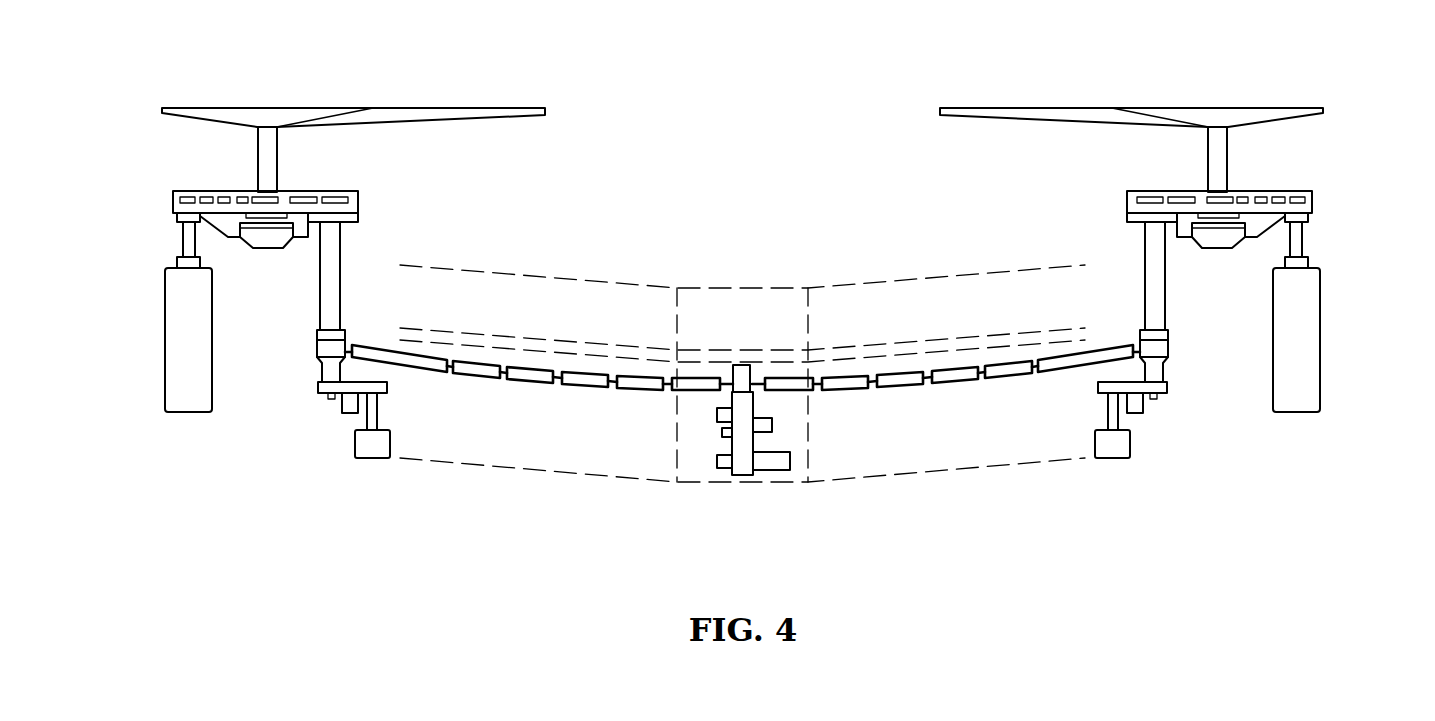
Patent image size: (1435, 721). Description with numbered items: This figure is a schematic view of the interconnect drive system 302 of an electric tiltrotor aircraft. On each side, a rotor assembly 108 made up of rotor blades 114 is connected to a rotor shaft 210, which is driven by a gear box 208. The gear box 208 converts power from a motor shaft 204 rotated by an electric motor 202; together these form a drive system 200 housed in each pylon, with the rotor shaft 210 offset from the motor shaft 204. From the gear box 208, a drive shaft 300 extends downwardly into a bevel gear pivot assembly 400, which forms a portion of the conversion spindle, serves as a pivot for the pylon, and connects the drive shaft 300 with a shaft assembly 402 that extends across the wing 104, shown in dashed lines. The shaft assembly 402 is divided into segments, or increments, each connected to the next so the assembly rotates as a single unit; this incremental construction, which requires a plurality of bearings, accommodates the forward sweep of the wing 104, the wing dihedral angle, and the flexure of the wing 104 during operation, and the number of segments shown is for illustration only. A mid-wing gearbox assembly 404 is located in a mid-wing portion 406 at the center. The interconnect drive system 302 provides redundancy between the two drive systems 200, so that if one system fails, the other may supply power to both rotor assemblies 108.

The wing 104 is at (587, 280).
The rotor assembly 108 is at (742, 132).
The rotor blades 114 is at (463, 107).
The drive system 200 is at (742, 313).
The electric motor 202 is at (162, 372).
The motor shaft 204 is at (182, 238).
The gear box 208 is at (187, 192).
The rotor shaft 210 is at (278, 162).
The drive shaft 300 is at (320, 285).
The interconnect drive system 302 is at (527, 515).
The bevel gear pivot assembly 400 is at (317, 350).
The shaft assembly 402 is at (853, 403).
The mid-wing gearbox assembly 404 is at (751, 514).
The mid-wing portion 406 is at (697, 477).